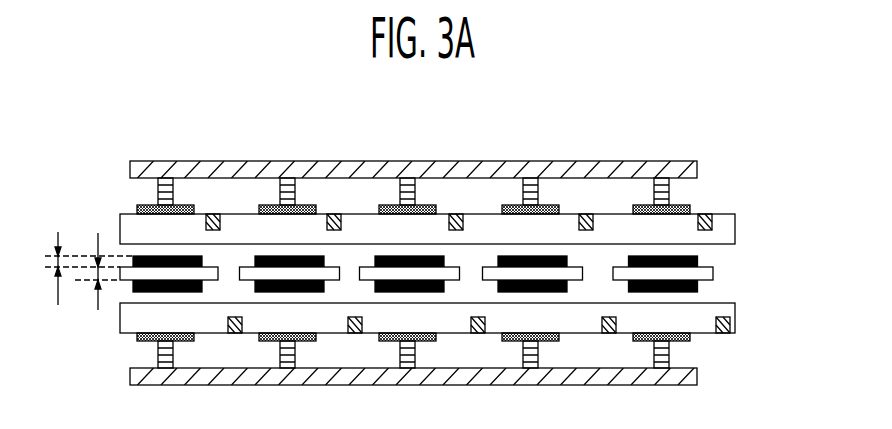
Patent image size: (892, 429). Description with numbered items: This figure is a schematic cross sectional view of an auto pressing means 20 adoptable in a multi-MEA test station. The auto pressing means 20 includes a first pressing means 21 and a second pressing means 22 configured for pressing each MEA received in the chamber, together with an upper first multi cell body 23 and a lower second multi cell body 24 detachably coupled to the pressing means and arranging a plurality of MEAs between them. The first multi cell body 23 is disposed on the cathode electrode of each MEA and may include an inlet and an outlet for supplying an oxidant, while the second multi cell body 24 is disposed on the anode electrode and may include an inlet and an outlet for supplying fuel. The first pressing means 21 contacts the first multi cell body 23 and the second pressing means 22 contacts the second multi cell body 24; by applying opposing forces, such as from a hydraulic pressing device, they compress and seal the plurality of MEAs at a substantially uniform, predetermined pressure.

The auto pressing means 20 is at (178, 150).
The first pressing means 21 is at (690, 173).
The second pressing means 22 is at (695, 377).
The first multi cell body 23 is at (728, 226).
The second multi cell body 24 is at (730, 310).
The membrane electrode assembly MEA is at (728, 272).